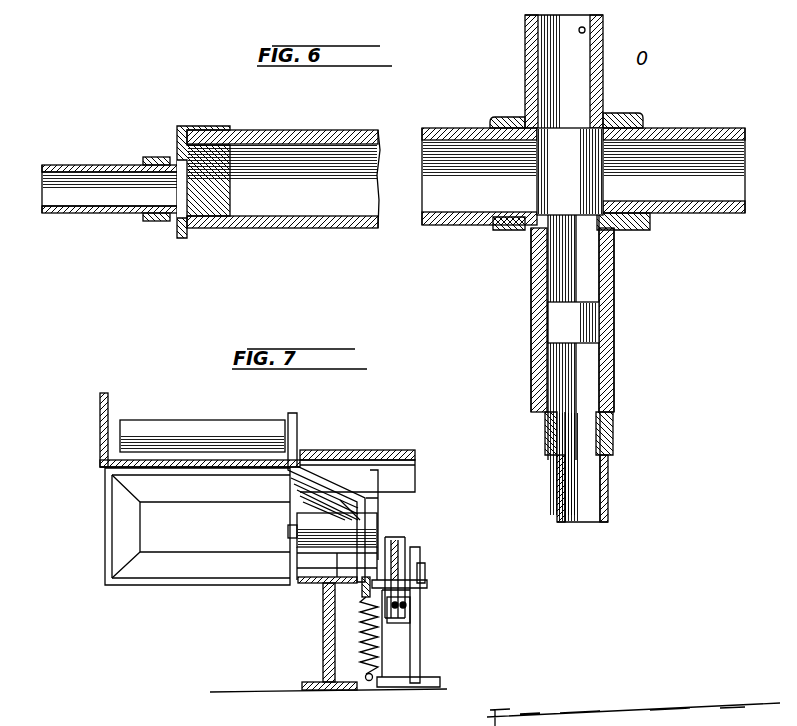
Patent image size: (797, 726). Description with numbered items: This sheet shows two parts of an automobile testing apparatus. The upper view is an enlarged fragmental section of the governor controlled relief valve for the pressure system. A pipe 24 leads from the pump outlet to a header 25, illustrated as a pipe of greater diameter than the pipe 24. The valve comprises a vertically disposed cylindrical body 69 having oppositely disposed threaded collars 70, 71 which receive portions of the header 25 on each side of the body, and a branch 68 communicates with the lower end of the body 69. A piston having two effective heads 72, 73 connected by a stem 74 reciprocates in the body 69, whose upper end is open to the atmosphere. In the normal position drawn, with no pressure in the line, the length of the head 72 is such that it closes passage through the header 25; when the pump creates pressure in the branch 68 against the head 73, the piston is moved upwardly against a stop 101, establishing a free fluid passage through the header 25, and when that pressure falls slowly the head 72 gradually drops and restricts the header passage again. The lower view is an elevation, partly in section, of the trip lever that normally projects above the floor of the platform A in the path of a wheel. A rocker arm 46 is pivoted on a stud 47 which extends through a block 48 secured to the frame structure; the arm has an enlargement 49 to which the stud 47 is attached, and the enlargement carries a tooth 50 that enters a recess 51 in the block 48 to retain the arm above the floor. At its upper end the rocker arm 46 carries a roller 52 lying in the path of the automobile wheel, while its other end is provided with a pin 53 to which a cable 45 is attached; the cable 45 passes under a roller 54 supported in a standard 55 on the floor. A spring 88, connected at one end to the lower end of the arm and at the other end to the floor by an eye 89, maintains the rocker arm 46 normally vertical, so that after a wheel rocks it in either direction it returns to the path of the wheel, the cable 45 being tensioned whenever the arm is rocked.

In FIG. 6, the pipe 24 is at (88, 165).
In FIG. 6, the header 25 is at (296, 131).
In FIG. 6, the stop 101 is at (586, 30).
In FIG. 6, the threaded collar 70 is at (498, 118).
In FIG. 6, the threaded collar 71 is at (640, 118).
In FIG. 6, the piston head 72 is at (556, 193).
In FIG. 6, the stem 74 is at (573, 257).
In FIG. 6, the cylindrical body 69 is at (614, 290).
In FIG. 6, the piston head 73 is at (597, 330).
In FIG. 6, the branch 68 is at (609, 490).
In FIG. 7, the roller 52 is at (150, 430).
In FIG. 7, the block 48 is at (313, 535).
In FIG. 7, the rocker arm 46 is at (292, 440).
In FIG. 7, the platform A is at (392, 450).
In FIG. 7, the stud 47 is at (297, 533).
In FIG. 7, the recess 51 is at (347, 523).
In FIG. 7, the enlargement 49 is at (380, 523).
In FIG. 7, the tooth 50 is at (352, 528).
In FIG. 7, the spring 88 is at (362, 633).
In FIG. 7, the eye 89 is at (368, 681).
In FIG. 7, the standard 55 is at (403, 650).
In FIG. 7, the roller 54 is at (405, 545).
In FIG. 7, the pin 53 is at (407, 616).
In FIG. 7, the cable 45 is at (410, 605).